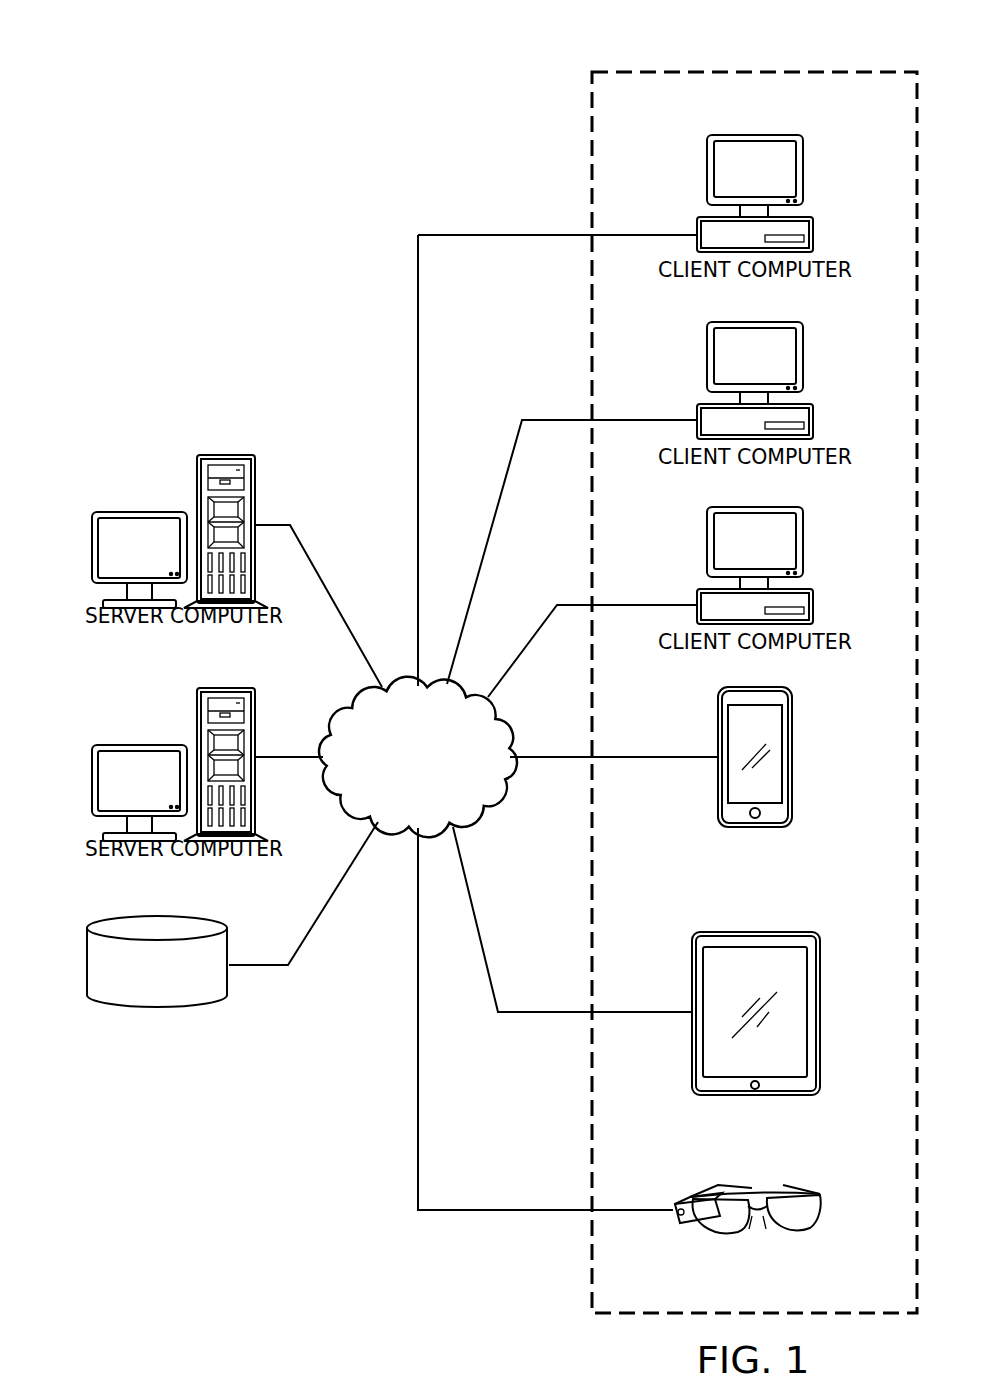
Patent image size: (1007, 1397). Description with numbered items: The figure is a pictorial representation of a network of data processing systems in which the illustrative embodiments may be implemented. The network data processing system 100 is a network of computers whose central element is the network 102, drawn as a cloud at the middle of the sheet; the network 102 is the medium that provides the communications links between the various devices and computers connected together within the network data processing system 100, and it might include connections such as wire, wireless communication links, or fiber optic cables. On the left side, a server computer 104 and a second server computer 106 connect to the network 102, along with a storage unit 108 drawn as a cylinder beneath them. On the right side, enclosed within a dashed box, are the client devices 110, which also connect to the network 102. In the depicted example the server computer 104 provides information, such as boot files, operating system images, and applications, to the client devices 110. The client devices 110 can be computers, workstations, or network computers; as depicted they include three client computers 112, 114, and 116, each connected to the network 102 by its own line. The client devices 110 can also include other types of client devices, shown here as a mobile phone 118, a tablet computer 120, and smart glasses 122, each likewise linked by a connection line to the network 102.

The network data processing system 100 is at (280, 115).
The network 102 is at (395, 791).
The server computer 104 is at (138, 512).
The server computer 106 is at (138, 745).
The storage unit 108 is at (157, 1008).
The client devices 110 is at (826, 64).
The client computer 112 is at (803, 170).
The client computer 114 is at (803, 357).
The client computer 116 is at (803, 542).
The mobile phone 118 is at (791, 775).
The tablet computer 120 is at (821, 1025).
The smart glasses 122 is at (820, 1212).